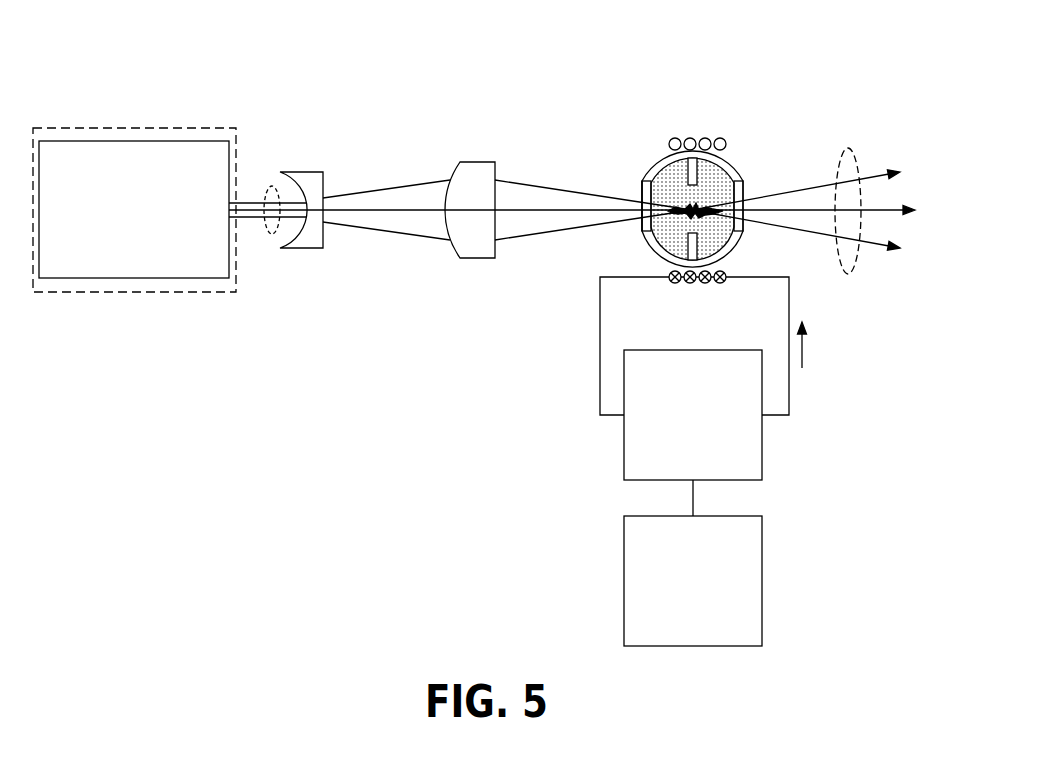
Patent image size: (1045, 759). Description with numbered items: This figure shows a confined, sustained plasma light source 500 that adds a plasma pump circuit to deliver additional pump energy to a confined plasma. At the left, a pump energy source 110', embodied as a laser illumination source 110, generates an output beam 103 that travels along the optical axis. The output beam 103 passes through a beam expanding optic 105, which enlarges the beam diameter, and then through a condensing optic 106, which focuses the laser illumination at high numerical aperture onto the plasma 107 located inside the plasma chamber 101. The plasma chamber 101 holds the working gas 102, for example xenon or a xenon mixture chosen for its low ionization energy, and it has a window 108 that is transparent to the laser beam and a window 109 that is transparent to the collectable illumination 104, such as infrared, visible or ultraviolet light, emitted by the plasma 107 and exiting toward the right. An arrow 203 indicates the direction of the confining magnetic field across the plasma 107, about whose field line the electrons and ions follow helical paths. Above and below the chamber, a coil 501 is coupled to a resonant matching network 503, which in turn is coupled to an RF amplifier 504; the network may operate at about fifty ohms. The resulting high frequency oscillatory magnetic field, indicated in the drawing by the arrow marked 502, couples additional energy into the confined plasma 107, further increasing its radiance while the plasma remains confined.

The CSP light source 500 is at (116, 97).
The laser illumination source 110 is at (134, 209).
The pump energy source 110' is at (134, 234).
The output beam 103 is at (268, 183).
The beam expanding optic 105 is at (297, 249).
The condensing optic 106 is at (473, 259).
The arrow 203 is at (652, 225).
The plasma chamber 101 is at (658, 163).
The working gas 102 is at (662, 187).
The window 108 is at (642, 193).
The window 109 is at (744, 191).
The plasma 107 is at (698, 207).
The coil 501 is at (705, 140).
The collectable illumination 104 is at (847, 148).
The RF drive circuit 502 is at (803, 350).
The resonant matching network 503 is at (676, 452).
The RF amplifier 504 is at (676, 620).